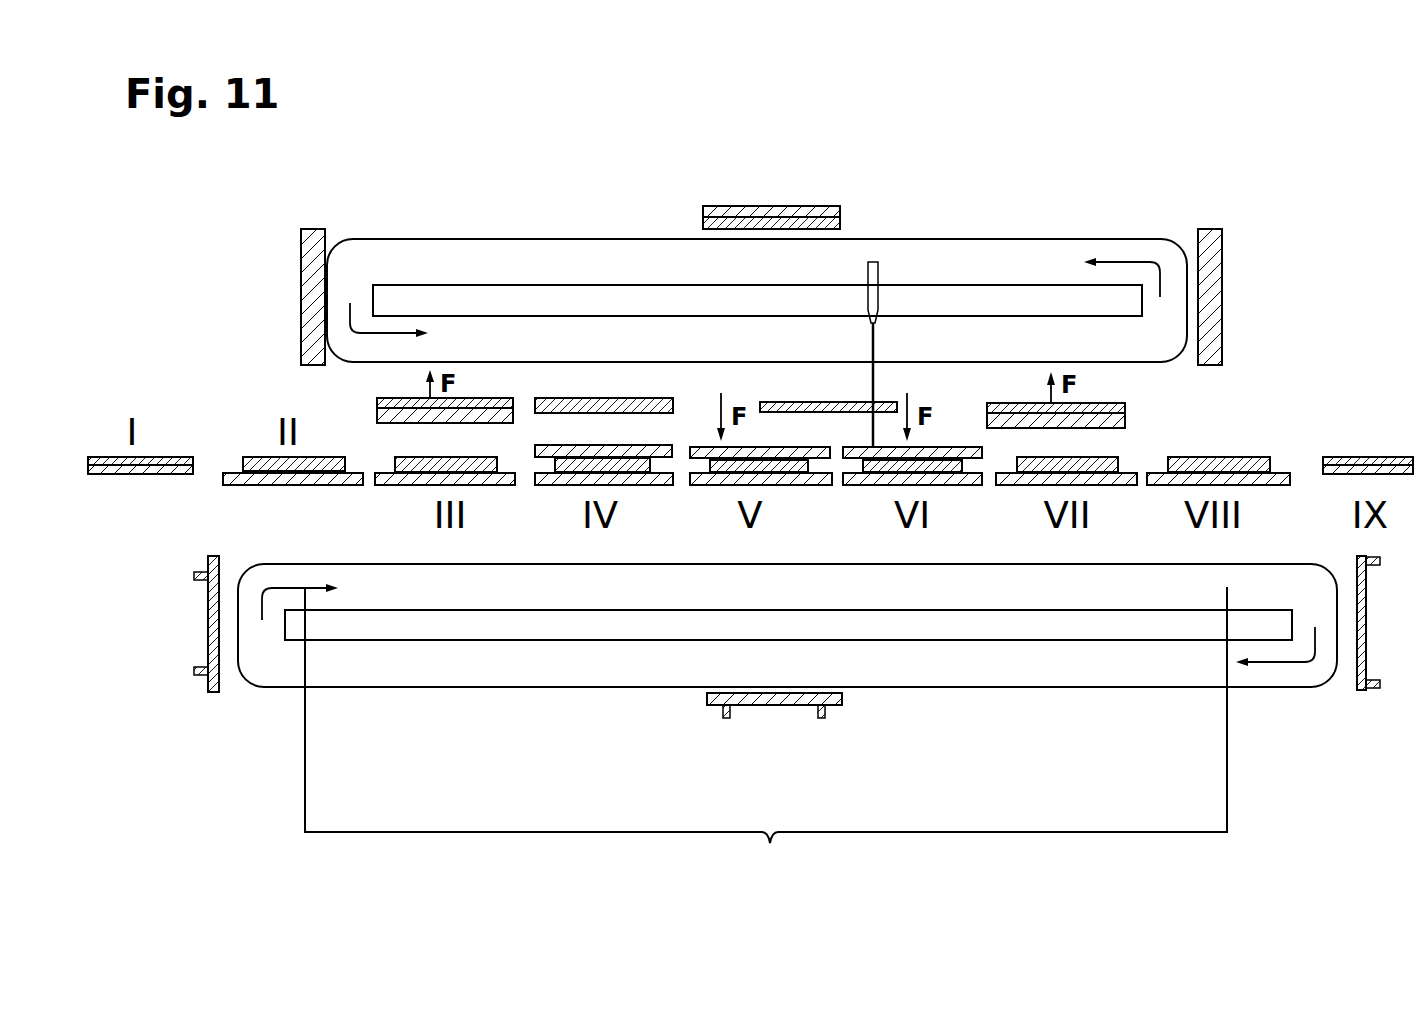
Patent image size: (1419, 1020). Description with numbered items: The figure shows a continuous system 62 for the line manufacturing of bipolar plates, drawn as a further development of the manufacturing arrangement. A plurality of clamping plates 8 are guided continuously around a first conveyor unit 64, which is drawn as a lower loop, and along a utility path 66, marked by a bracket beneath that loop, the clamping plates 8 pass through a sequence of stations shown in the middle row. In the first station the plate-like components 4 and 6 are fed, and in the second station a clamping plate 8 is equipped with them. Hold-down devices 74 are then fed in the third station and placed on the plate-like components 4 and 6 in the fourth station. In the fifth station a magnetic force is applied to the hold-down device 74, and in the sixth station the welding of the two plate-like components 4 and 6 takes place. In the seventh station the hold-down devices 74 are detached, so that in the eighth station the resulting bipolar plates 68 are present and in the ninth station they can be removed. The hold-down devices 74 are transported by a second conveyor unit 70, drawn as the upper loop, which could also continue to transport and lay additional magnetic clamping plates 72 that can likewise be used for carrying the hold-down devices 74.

The plate-like component 4 is at (107, 475).
The plate-like component 6 is at (168, 457).
The clamping plate 8 is at (208, 640).
The continuous system 62 is at (1208, 158).
The first conveyor unit 64 is at (548, 671).
The utility path 66 is at (766, 733).
The bipolar plate 68 is at (1242, 458).
The second conveyor unit 70 is at (1005, 248).
The magnetic clamping plate 72 is at (703, 224).
The hold-down device 74 is at (797, 208).